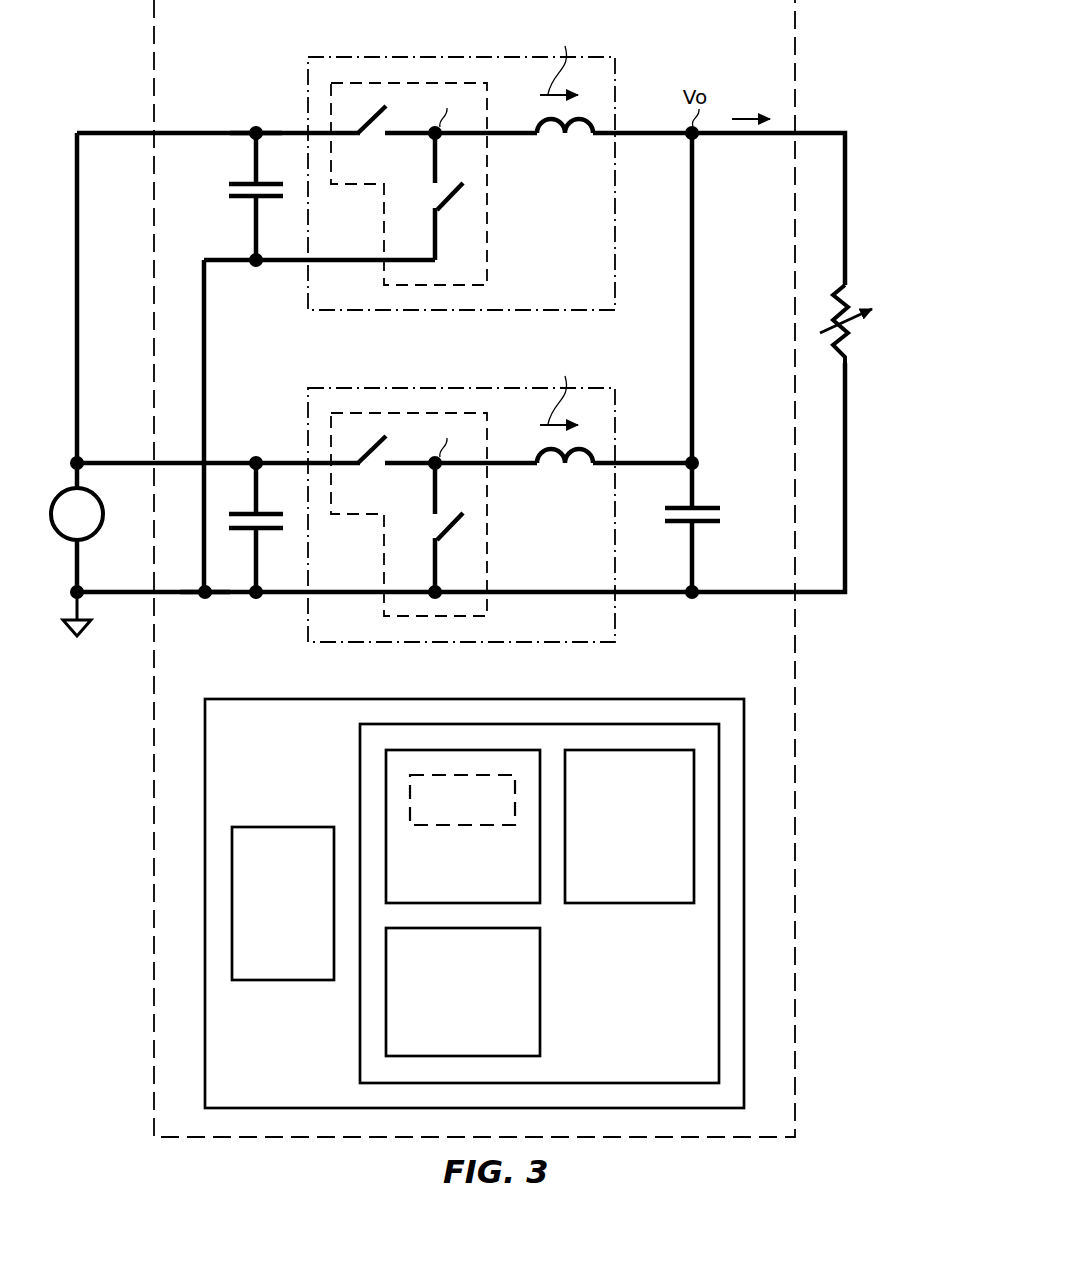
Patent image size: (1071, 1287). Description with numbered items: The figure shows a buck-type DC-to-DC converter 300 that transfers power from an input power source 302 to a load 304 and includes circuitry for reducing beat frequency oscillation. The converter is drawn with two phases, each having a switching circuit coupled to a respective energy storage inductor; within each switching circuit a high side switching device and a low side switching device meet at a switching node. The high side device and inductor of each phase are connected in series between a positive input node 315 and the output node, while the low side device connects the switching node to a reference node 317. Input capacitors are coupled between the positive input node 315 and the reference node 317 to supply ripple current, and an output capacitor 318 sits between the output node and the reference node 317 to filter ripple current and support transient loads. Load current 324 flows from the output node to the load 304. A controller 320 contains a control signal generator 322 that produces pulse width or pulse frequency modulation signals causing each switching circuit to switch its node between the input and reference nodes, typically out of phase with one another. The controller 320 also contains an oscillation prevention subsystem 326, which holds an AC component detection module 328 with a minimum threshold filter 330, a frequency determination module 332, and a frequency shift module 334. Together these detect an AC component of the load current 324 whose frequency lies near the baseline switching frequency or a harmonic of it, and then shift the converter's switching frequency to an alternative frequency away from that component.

The DC-to-DC converter 300 is at (795, 30).
The input power source 302 is at (62, 496).
The load 304 is at (862, 345).
The positive input node 315 is at (258, 128).
The reference node 317 is at (205, 600).
The output capacitor 318 is at (670, 536).
The controller 320 is at (474, 882).
The control signal generator 322 is at (283, 903).
The load current 324 is at (738, 118).
The oscillation prevention subsystem 326 is at (539, 869).
The AC component detection module 328 is at (463, 779).
The minimum threshold filter 330 is at (448, 775).
The frequency determination module 332 is at (629, 826).
The frequency shift module 334 is at (463, 992).